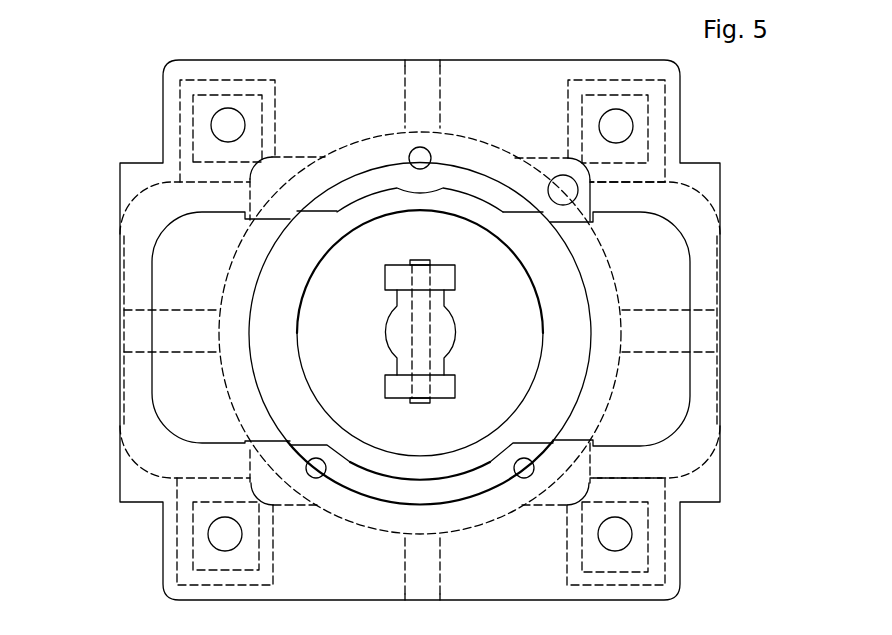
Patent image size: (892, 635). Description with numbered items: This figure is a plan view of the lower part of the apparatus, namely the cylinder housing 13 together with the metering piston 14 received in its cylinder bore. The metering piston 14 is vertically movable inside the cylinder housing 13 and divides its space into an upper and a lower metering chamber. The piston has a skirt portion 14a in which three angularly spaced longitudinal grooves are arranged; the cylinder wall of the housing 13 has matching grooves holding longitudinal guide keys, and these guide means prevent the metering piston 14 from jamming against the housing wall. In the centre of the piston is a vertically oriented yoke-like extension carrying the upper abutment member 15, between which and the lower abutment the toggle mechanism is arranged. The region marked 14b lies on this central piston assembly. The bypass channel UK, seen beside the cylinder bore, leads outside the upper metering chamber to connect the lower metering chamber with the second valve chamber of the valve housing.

The cylinder housing 13 is at (138, 182).
The metering piston 14 is at (302, 256).
The skirt portion 14a is at (355, 474).
The coupling socket 14b is at (447, 277).
The upper abutment member 15 is at (422, 352).
The bypass channel UK is at (563, 191).